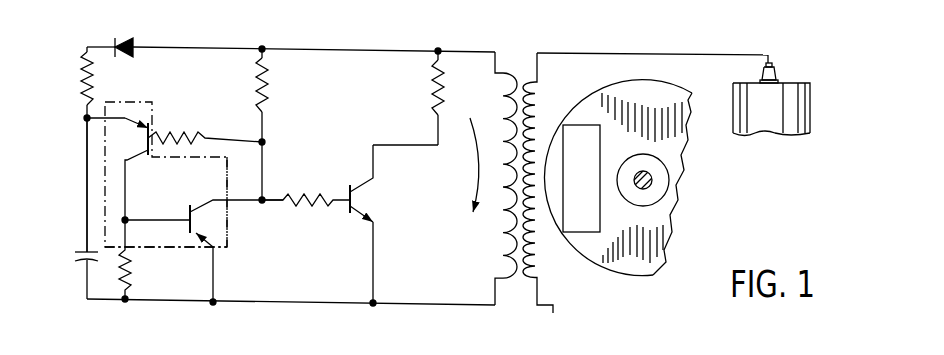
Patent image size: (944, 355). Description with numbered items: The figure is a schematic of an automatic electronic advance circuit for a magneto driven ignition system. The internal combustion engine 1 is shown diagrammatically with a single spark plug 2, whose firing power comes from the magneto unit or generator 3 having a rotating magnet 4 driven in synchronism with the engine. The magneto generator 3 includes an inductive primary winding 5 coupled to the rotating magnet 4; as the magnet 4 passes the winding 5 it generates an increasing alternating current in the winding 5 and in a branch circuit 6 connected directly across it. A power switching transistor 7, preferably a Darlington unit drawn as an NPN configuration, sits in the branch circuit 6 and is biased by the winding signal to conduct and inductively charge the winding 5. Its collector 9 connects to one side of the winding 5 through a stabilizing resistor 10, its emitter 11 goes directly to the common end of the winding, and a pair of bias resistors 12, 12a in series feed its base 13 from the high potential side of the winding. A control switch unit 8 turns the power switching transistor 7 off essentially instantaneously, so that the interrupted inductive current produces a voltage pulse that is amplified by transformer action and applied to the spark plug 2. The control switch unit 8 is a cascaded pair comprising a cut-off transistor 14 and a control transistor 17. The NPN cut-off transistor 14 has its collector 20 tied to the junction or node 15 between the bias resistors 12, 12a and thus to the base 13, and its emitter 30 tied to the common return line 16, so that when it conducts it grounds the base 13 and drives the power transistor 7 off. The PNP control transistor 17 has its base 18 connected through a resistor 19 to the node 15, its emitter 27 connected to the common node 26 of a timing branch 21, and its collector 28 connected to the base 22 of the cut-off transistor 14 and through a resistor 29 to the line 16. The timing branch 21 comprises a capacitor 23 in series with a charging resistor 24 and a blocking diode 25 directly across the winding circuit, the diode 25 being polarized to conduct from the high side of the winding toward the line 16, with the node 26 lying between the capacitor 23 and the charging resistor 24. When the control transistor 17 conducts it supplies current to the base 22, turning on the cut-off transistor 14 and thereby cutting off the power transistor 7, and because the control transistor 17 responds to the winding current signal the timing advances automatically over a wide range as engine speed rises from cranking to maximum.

The internal combustion engine 1 is at (773, 144).
The spark plug 2 is at (778, 72).
The magneto unit or generator 3 is at (560, 44).
The rotating magnet 4 is at (585, 196).
The inductive primary winding 5 is at (513, 72).
The branch circuit 6 is at (409, 143).
The power switching transistor 7 is at (382, 223).
The control switch unit 8 is at (177, 250).
The collector 9 is at (366, 180).
The stabilizing resistor 10 is at (433, 80).
The emitter 11 is at (362, 210).
The bias resistor 12 is at (268, 90).
The bias resistor 12a is at (305, 195).
The base 13 is at (350, 214).
The cut-off transistor 14 is at (217, 231).
The junction or node 15 is at (264, 205).
The common return line 16 is at (320, 299).
The control transistor 17 is at (125, 144).
The base 18 is at (152, 132).
The resistor 19 is at (205, 138).
The collector 20 is at (224, 231).
The timing branch 21 is at (85, 197).
The base 22 is at (182, 218).
The capacitor 23 is at (80, 248).
The charging resistor 24 is at (80, 74).
The blocking diode 25 is at (125, 40).
The common node 26 is at (85, 118).
The emitter 27 is at (141, 127).
The collector 28 is at (130, 158).
The resistor 29 is at (130, 270).
The emitter 30 is at (198, 234).